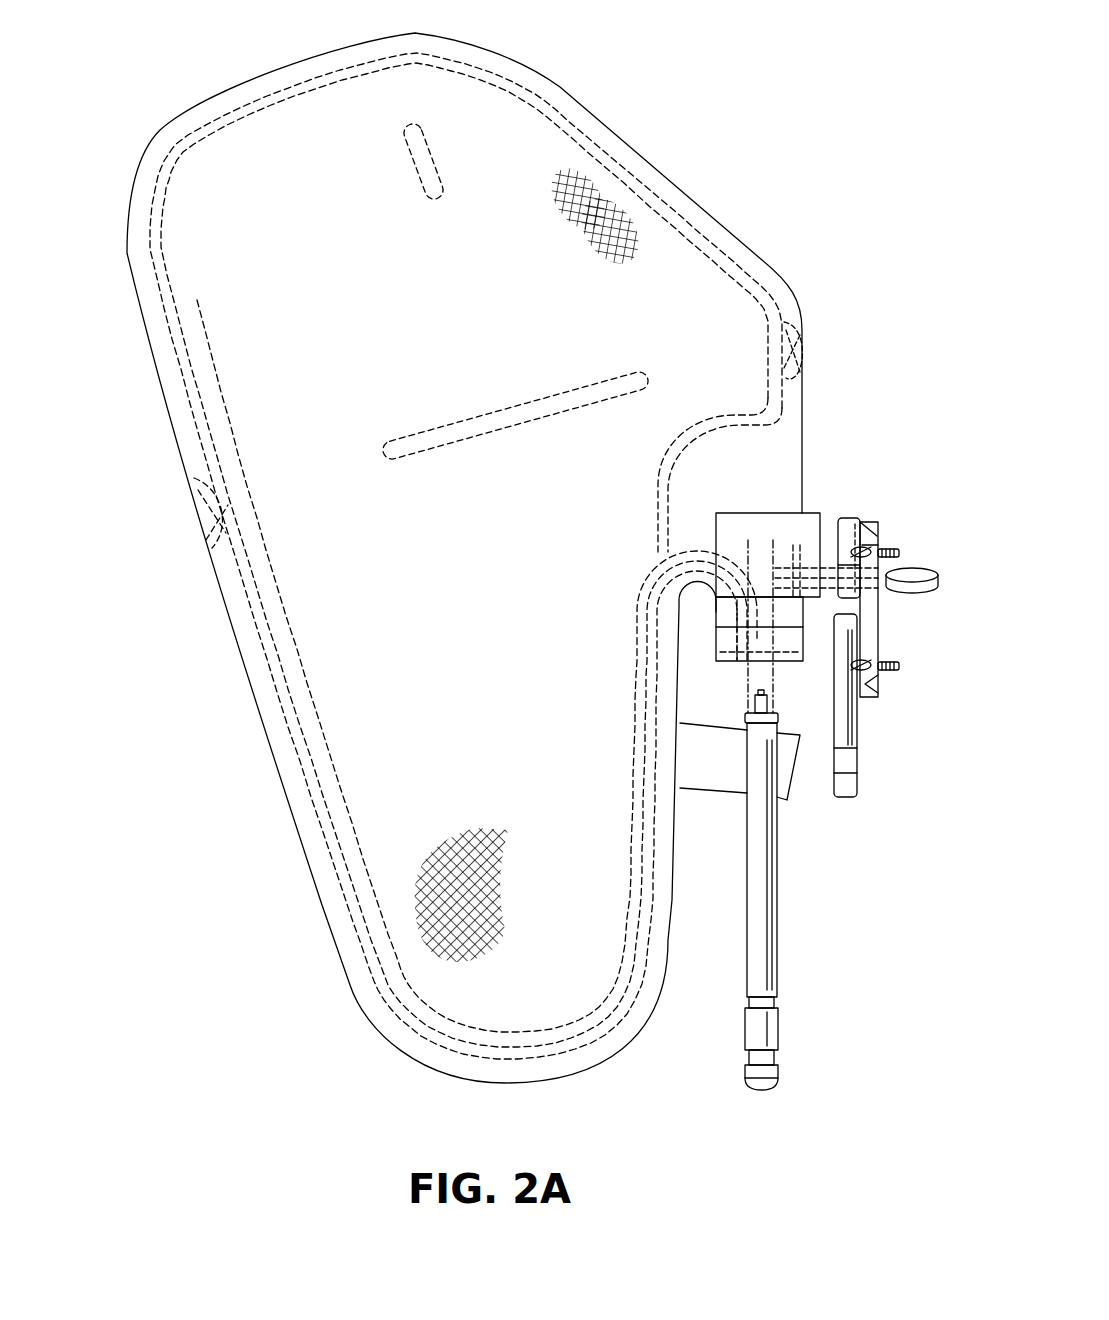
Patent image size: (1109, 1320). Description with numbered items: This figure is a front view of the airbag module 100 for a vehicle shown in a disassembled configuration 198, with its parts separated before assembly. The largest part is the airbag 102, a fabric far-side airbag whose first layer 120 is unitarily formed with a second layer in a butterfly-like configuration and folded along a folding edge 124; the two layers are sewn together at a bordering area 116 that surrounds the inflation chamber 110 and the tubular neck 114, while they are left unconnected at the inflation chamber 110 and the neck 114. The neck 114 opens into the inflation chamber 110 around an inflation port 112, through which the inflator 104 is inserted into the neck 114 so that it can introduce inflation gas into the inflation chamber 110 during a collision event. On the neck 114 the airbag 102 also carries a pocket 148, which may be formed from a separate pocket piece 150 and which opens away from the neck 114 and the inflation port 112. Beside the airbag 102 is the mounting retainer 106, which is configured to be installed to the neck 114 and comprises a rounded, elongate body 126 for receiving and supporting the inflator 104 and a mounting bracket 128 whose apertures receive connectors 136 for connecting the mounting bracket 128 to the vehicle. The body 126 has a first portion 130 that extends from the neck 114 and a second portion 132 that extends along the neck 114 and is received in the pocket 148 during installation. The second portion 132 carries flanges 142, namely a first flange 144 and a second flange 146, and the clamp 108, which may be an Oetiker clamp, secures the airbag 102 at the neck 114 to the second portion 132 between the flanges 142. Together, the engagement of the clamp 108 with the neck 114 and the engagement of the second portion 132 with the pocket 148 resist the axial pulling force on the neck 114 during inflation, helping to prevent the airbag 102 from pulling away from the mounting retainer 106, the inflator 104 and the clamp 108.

The airbag module 100 is at (832, 286).
The airbag 102 is at (162, 143).
The inflator 104 is at (780, 978).
The mounting retainer 106 is at (893, 570).
The clamp 108 is at (917, 595).
The inflation chamber 110 is at (190, 205).
The inflation port 112 is at (760, 663).
The tubular neck 114 is at (678, 640).
The bordering area 116 is at (172, 342).
The first layer 120 is at (253, 380).
The folding edge 124 is at (802, 393).
The elongate body 126 is at (853, 530).
The mounting bracket 128 is at (878, 527).
The first portion 130 is at (857, 757).
The second portion 132 is at (853, 520).
The connectors 136 is at (900, 553).
The flanges 142 is at (919, 582).
The first flange 144 is at (870, 547).
The second flange 146 is at (860, 607).
The pocket 148 is at (760, 593).
The pocket piece 150 is at (760, 532).
The disassembled configuration 198 is at (833, 766).